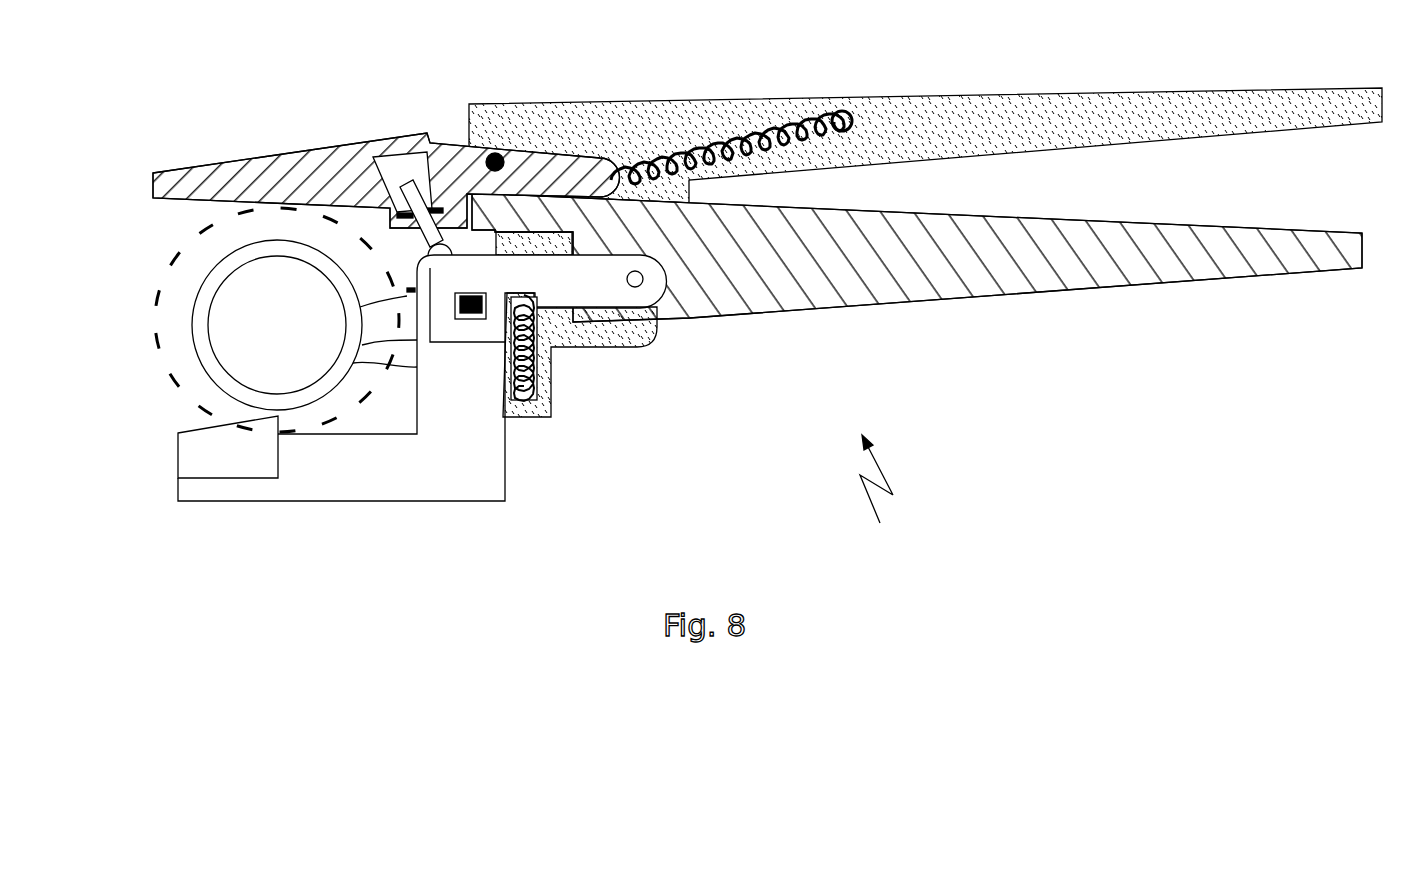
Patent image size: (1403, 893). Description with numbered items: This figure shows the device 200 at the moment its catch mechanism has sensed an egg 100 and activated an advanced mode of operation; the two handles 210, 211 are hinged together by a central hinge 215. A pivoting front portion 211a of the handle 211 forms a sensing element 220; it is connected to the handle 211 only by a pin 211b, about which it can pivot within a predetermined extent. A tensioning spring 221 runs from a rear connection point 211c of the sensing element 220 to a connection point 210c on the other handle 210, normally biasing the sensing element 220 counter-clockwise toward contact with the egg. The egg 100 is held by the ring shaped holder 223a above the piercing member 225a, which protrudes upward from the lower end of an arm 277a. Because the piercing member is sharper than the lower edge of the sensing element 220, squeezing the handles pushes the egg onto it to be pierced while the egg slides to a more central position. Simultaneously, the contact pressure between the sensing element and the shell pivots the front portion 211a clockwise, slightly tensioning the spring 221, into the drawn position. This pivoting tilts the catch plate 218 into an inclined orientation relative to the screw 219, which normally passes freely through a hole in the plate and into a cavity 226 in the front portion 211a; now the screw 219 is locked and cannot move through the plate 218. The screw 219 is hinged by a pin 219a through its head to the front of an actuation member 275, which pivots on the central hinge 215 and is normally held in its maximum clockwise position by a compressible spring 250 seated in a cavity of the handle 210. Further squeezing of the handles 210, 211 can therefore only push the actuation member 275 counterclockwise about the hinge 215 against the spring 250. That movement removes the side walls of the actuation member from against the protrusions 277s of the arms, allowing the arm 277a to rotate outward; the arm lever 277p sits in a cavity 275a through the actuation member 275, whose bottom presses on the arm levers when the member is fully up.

The handle 210 is at (1060, 92).
The handle 211 is at (1073, 277).
The pivoting front portion 211a is at (303, 148).
The pin 211b is at (493, 153).
The rear connection point 211c is at (620, 163).
The connection point 210c is at (837, 110).
The tensioning spring 221 is at (358, 303).
The cavity 226 is at (390, 150).
The catch plate 218 is at (440, 207).
The screw 219 is at (410, 183).
The pin 219a is at (435, 257).
The sensing element 220 is at (183, 203).
The protrusions 277s is at (432, 251).
The egg 100 is at (157, 306).
The ring shaped holder 223a is at (200, 340).
The arm lever 277p is at (398, 357).
The piercing member 225a is at (188, 445).
The cavity 275a is at (475, 320).
The actuation member 275 is at (598, 290).
The central hinge 215 is at (640, 287).
The compressible spring 250 is at (538, 384).
The arm 277a is at (447, 485).
The device 200 is at (887, 501).